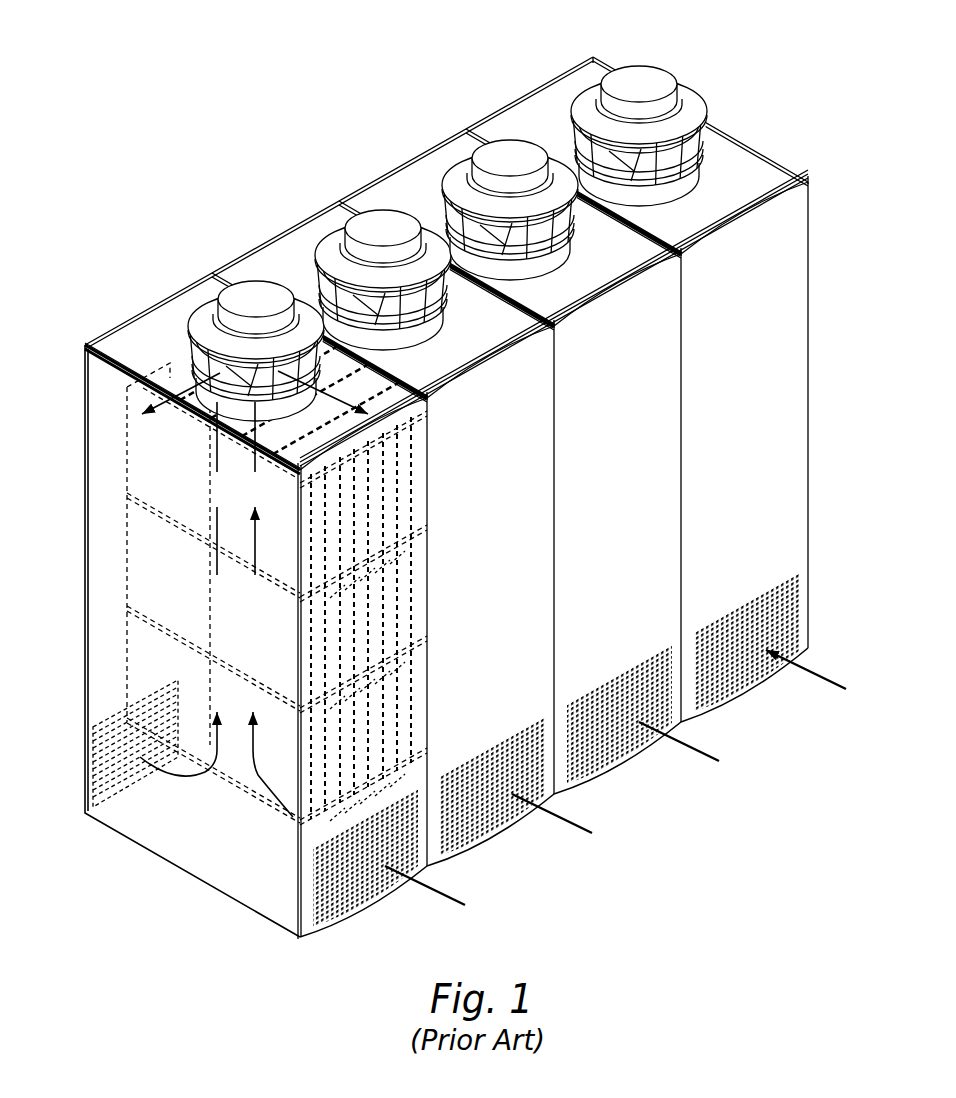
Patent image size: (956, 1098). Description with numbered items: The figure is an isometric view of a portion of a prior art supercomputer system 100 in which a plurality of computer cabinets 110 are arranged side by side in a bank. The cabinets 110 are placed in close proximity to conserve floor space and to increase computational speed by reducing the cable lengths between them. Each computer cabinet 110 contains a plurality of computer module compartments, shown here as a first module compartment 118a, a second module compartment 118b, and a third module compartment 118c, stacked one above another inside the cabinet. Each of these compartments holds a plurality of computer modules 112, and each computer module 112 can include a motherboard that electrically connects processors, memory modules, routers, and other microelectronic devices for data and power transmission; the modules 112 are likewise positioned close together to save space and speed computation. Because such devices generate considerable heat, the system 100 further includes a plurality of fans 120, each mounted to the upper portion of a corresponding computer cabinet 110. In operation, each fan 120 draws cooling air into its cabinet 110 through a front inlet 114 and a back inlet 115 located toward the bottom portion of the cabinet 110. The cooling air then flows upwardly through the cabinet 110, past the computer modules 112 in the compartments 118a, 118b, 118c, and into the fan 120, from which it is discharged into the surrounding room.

The prior art supercomputer system 100 is at (160, 128).
The computer cabinet 110 is at (388, 519).
The computer module 112 is at (383, 613).
The front inlet 114 is at (345, 885).
The back inlet 115 is at (85, 763).
The first module compartment 118a is at (390, 757).
The second module compartment 118b is at (390, 645).
The third module compartment 118c is at (390, 534).
The fan 120 is at (233, 292).